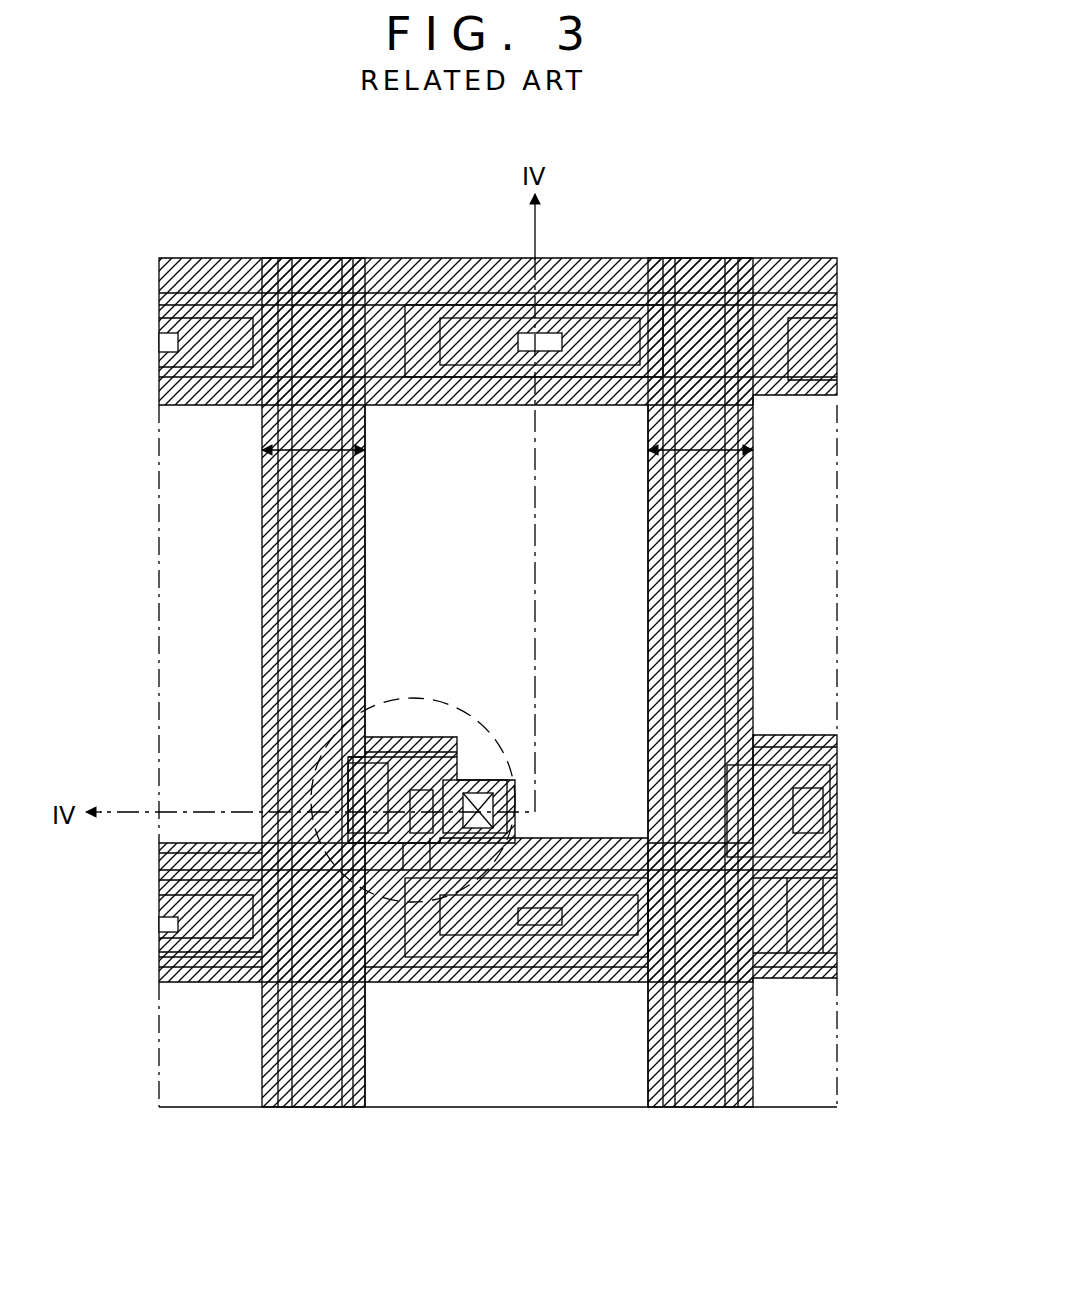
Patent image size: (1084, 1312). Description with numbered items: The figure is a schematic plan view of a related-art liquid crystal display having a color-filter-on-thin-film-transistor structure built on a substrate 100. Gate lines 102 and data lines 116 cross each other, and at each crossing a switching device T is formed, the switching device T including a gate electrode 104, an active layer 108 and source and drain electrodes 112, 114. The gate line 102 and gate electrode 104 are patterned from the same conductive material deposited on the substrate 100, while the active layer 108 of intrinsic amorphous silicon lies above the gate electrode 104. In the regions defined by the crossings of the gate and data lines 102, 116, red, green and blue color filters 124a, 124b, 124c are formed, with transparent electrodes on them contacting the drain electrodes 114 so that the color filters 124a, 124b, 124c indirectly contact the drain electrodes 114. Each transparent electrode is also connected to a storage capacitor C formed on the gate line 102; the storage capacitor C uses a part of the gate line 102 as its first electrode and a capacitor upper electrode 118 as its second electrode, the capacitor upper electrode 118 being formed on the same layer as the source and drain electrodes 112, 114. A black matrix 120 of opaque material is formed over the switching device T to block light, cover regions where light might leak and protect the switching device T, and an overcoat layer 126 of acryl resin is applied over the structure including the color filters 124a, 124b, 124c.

The substrate 100 is at (848, 995).
The gate line 102 is at (836, 869).
The gate electrode 104 is at (433, 735).
The active layer 108 is at (460, 740).
The source electrode 112 is at (376, 745).
The drain electrode 114 is at (515, 796).
The data line 116 is at (275, 540).
The capacitor upper electrode 118 is at (646, 300).
The black matrix 120 is at (885, 572).
The color filter 124a is at (185, 462).
The color filter 124b is at (393, 450).
The color filter 124c is at (815, 462).
The overcoat layer 126 is at (421, 292).
The switching device T is at (474, 700).
The storage capacitor C is at (600, 1062).